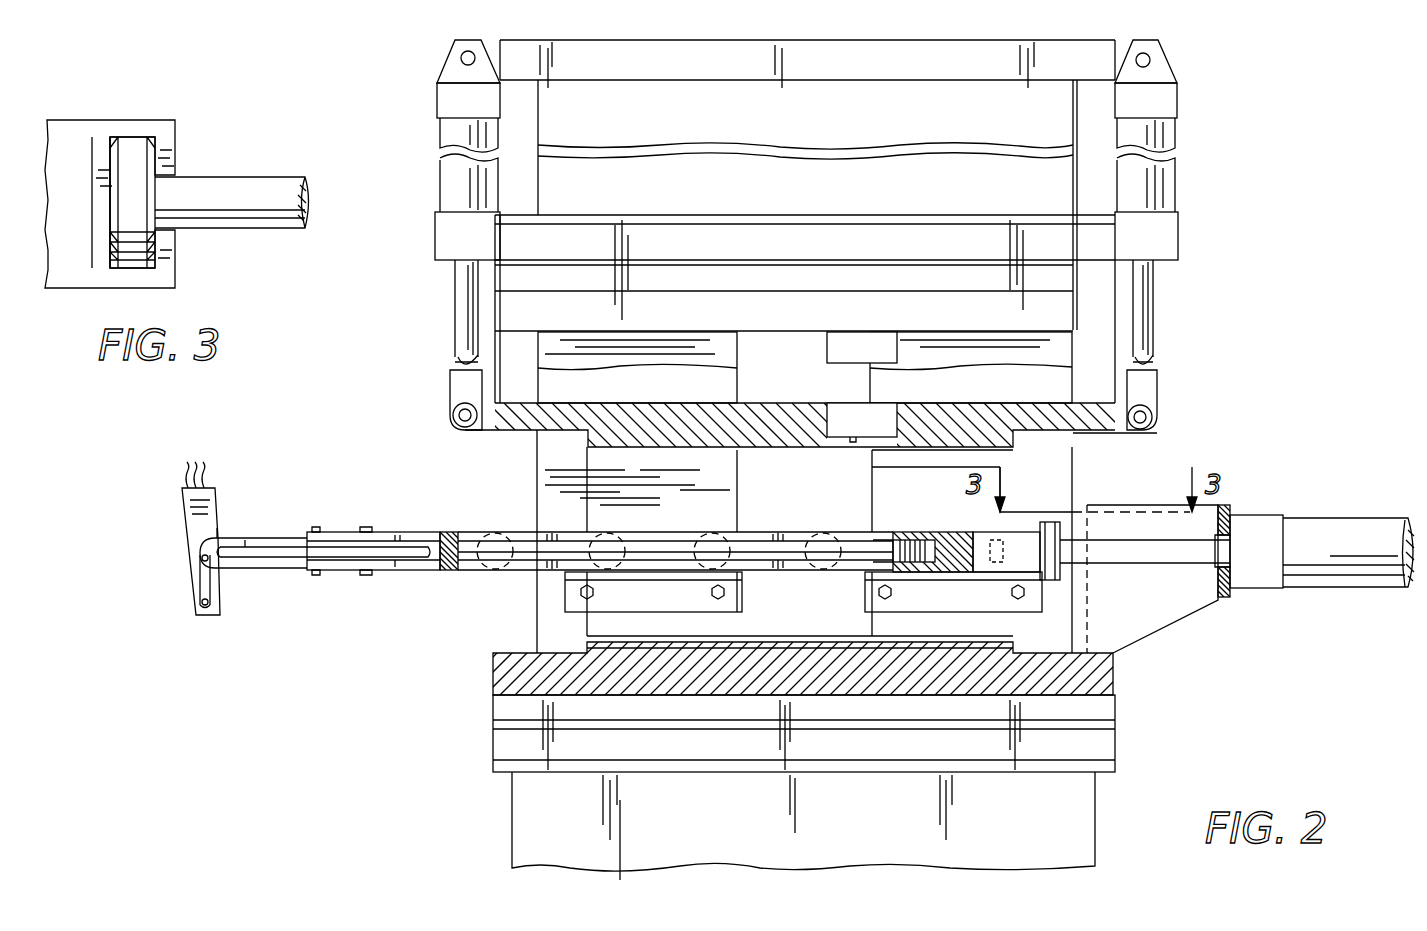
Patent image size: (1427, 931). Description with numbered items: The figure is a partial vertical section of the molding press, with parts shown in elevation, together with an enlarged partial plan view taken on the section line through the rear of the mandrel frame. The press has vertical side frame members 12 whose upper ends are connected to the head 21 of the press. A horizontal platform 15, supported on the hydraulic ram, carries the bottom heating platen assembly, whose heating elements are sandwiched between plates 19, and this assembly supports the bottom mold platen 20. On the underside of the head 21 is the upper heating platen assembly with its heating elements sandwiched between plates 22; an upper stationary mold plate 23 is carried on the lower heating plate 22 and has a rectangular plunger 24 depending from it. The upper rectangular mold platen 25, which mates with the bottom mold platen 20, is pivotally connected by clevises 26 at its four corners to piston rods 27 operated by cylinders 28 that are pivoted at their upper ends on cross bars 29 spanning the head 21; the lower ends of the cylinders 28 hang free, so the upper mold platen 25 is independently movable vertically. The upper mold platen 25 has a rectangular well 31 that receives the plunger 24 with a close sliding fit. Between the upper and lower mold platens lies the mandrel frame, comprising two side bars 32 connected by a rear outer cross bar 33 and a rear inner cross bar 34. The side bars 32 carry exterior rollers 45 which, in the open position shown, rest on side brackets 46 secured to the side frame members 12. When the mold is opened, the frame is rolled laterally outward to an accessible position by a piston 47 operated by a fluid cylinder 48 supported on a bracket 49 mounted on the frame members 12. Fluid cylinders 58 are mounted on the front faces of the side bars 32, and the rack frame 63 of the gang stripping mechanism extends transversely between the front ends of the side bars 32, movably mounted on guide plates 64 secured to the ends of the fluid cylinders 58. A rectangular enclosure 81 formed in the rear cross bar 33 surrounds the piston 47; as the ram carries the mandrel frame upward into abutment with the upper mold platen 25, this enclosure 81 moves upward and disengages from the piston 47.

In FIG. 2, the vertical side frame members 12 is at (537, 497).
In FIG. 2, the horizontal platform 15 is at (803, 826).
In FIG. 2, the plates 19 is at (1150, 728).
In FIG. 2, the bottom mold platen 20 is at (1105, 680).
In FIG. 2, the head 21 is at (805, 130).
In FIG. 2, the plates 22 is at (822, 233).
In FIG. 2, the upper stationary mold plate 23 is at (1088, 318).
In FIG. 2, the rectangular plunger 24 is at (885, 351).
In FIG. 2, the upper rectangular mold platen 25 is at (790, 410).
In FIG. 2, the clevises 26 is at (460, 393).
In FIG. 2, the piston rods 27 is at (460, 318).
In FIG. 2, the cylinders 28 is at (450, 188).
In FIG. 2, the cross bars 29 is at (860, 46).
In FIG. 2, the rectangular well 31 is at (840, 416).
In FIG. 2, the side bars 32 is at (450, 572).
In FIG. 2, the rear outer cross bar 33 is at (965, 531).
In FIG. 2, the rear inner cross bar 34 is at (910, 536).
In FIG. 2, the exterior rollers 45 is at (617, 542).
In FIG. 2, the side brackets 46 is at (860, 608).
In FIG. 3, the piston 47 is at (140, 152).
In FIG. 2, the piston 47 is at (1060, 574).
In FIG. 2, the fluid cylinder 48 is at (1335, 578).
In FIG. 2, the bracket 49 is at (1163, 621).
In FIG. 2, the fluid cylinders 58 is at (352, 570).
In FIG. 2, the rack frame 63 is at (178, 524).
In FIG. 2, the guide plates 64 is at (268, 560).
In FIG. 3, the rectangular enclosure 81 is at (163, 280).
In FIG. 2, the rectangular enclosure 81 is at (1030, 560).